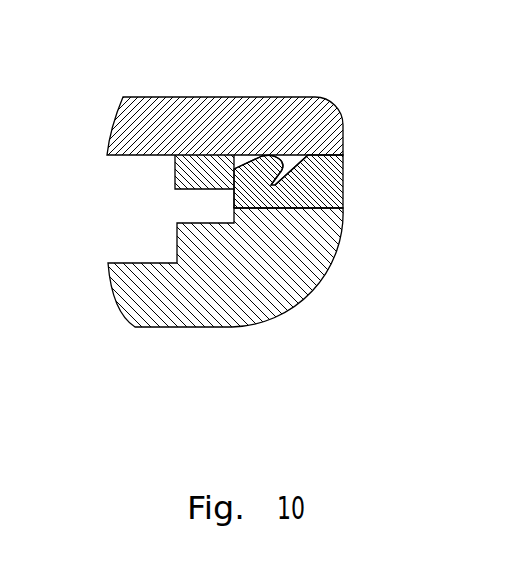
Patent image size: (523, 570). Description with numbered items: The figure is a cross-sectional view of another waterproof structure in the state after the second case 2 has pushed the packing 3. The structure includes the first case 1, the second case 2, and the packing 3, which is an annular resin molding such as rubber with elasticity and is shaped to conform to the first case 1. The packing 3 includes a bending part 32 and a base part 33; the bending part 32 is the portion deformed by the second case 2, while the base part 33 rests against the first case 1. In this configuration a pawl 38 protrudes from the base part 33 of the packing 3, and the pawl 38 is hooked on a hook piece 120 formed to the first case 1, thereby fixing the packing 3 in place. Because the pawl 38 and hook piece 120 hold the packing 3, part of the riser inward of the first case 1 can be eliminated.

The first case 1 is at (177, 328).
The second case 2 is at (175, 95).
The packing 3 is at (345, 178).
The bending part 32 is at (268, 157).
The base part 33 is at (300, 194).
The pawl 38 is at (232, 198).
The hook piece 120 is at (175, 172).